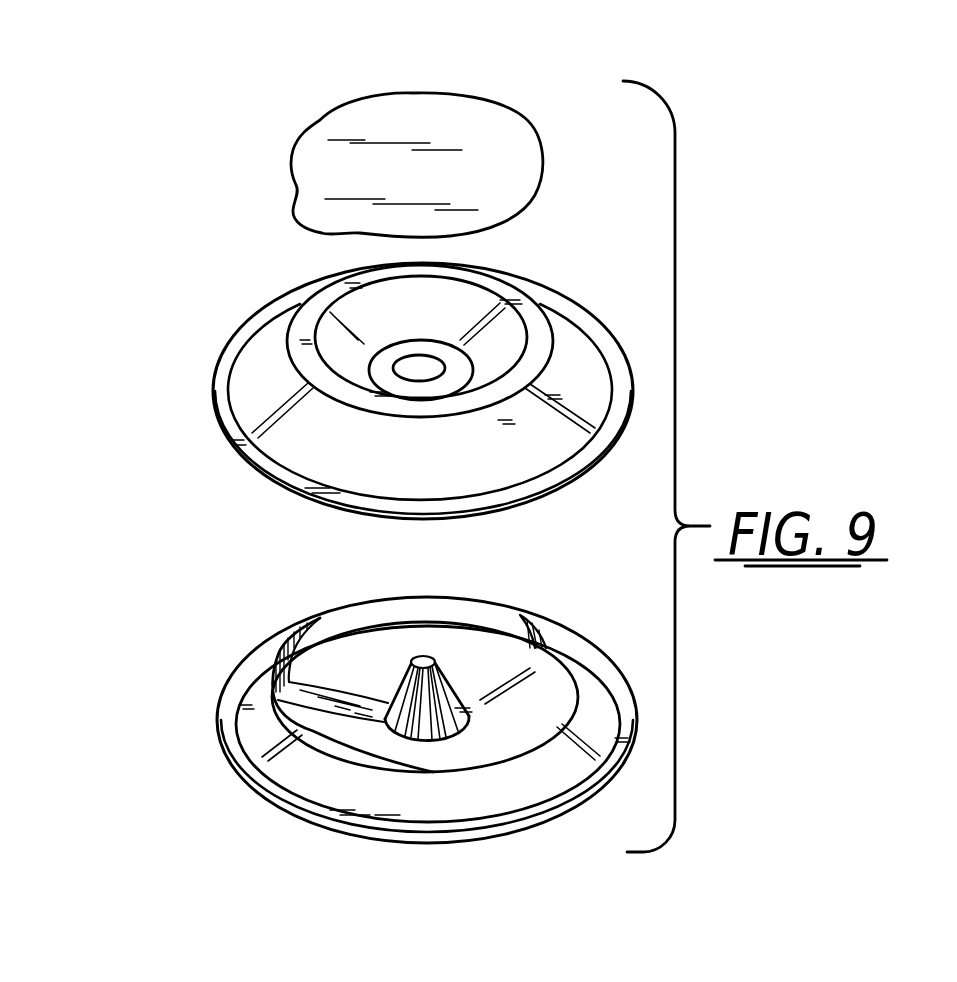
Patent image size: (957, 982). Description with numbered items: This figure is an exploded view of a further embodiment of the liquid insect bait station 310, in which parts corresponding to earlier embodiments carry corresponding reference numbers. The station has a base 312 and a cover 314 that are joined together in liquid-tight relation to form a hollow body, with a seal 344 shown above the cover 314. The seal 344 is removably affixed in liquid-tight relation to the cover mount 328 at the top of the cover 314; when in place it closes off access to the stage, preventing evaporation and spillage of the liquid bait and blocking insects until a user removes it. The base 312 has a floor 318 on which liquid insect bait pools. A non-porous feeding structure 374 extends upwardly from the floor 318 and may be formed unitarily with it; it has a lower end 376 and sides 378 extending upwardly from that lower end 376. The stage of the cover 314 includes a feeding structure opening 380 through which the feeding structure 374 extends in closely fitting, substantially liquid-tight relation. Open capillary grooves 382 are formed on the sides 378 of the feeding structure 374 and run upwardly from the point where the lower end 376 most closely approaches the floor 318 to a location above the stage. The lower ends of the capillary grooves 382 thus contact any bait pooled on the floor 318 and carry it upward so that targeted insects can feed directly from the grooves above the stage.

The insect bait station 310 is at (160, 108).
The base 312 is at (376, 730).
The cover 314 is at (391, 356).
The floor 318 is at (323, 678).
The cover mount 328 is at (530, 298).
The seal 344 is at (465, 98).
The feeding structure 374 is at (428, 660).
The lower end 376 is at (385, 730).
The sides 378 is at (277, 700).
The feeding structure opening 380 is at (422, 368).
The capillary grooves 382 is at (434, 740).